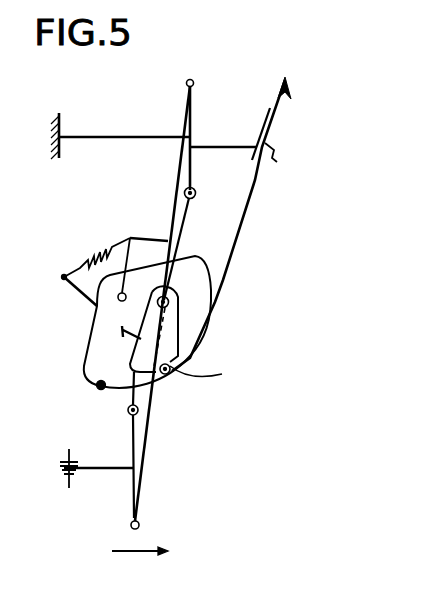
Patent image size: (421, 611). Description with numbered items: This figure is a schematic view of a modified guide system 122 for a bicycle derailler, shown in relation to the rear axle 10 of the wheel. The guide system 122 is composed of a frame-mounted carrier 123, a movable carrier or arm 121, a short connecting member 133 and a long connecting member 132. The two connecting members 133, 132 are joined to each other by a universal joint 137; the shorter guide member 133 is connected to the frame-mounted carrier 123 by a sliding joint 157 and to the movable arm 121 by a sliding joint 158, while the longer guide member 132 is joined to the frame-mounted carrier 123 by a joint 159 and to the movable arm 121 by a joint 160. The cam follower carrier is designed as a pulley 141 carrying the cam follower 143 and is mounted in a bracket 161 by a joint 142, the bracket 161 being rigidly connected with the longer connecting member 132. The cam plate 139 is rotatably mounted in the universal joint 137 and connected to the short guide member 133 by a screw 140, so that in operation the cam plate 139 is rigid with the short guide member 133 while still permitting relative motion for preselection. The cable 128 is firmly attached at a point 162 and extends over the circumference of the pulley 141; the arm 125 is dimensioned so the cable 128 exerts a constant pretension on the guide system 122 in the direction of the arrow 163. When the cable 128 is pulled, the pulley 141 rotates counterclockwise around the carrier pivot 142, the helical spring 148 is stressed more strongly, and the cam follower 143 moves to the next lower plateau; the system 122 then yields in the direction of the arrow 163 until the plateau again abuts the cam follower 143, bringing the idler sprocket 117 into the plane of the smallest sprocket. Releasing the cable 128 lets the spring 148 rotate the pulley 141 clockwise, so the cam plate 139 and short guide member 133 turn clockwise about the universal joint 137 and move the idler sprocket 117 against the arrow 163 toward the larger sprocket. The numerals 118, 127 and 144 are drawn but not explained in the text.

The rear axle 10 is at (67, 118).
The idler sprocket 117 is at (66, 453).
The link 118 is at (100, 470).
The movable carrier or arm 121 is at (132, 448).
The guide system 122 is at (170, 173).
The frame-mounted carrier 123 is at (194, 162).
The arm 125 is at (209, 147).
The connection 127 is at (290, 163).
The cable 128 is at (249, 204).
The long connecting member 132 is at (145, 456).
The short connecting member 133 is at (183, 230).
The universal joint 137 is at (169, 302).
The cam plate 139 is at (178, 331).
The screw 140 is at (122, 332).
The pulley 141 is at (90, 351).
The joint 142 is at (92, 290).
The cam follower 143 is at (169, 374).
The surface 144 is at (258, 389).
The helical spring 148 is at (96, 256).
The sliding joint 157 is at (197, 199).
The sliding joint 158 is at (127, 410).
The joint 159 is at (196, 82).
The joint 160 is at (140, 526).
The bracket 161 is at (131, 236).
The attachment point 162 is at (96, 386).
The arrow 163 is at (128, 550).